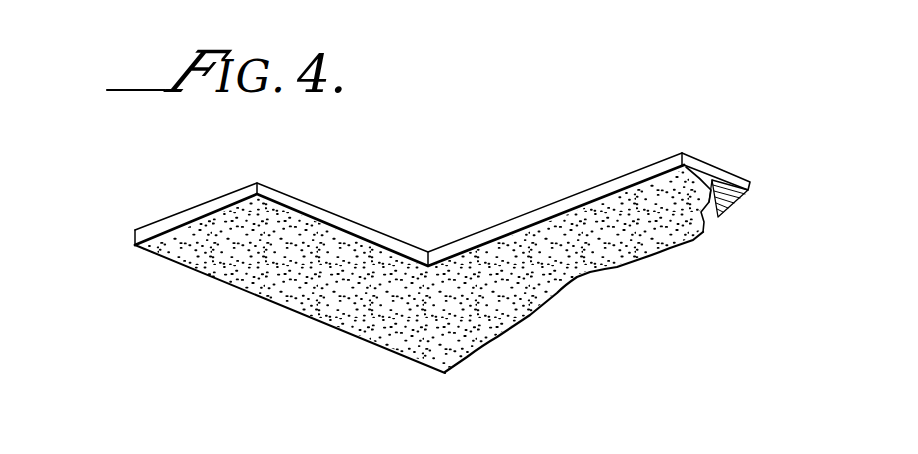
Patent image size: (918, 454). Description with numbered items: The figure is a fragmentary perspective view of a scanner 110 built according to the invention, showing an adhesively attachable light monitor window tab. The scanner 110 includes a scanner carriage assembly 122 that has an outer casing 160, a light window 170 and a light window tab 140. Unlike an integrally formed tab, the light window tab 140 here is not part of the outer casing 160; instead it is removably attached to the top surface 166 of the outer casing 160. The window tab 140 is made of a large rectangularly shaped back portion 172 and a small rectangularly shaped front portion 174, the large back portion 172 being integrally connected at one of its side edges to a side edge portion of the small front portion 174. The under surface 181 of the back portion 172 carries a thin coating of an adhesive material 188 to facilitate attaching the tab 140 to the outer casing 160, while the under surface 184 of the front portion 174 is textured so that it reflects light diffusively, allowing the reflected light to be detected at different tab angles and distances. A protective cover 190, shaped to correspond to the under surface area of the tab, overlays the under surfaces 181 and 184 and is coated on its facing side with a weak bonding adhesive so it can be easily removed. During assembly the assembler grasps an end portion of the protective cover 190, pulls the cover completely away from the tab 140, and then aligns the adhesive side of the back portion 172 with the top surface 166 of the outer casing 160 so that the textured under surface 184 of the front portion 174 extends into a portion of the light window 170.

The scanner 110 is at (152, 193).
The scanner carriage assembly 122 is at (671, 330).
The light window tab 140 is at (637, 161).
The outer casing 160 is at (158, 298).
The top surface 166 is at (754, 264).
The light window 170 is at (563, 353).
The back portion 172 is at (556, 207).
The front portion 174 is at (324, 208).
The under surface 181 is at (736, 194).
The under surface 184 is at (134, 245).
The adhesive material 188 is at (417, 353).
The protective cover 190 is at (711, 201).